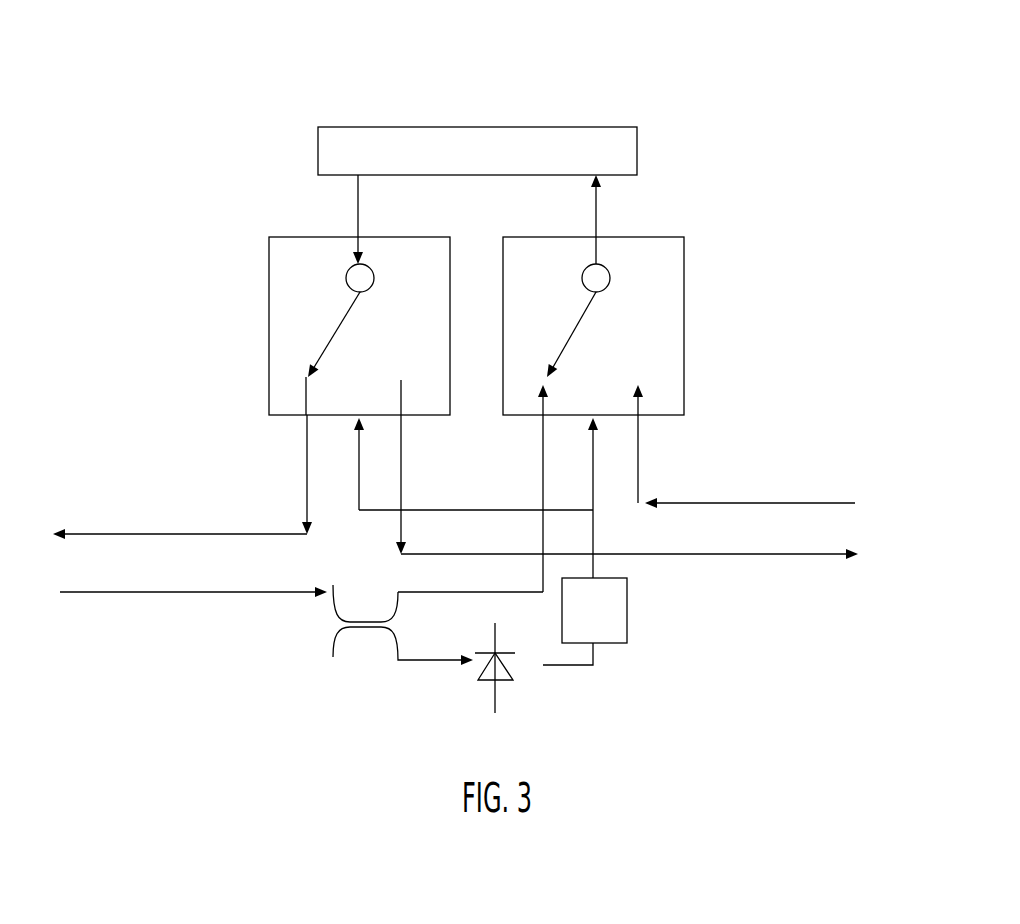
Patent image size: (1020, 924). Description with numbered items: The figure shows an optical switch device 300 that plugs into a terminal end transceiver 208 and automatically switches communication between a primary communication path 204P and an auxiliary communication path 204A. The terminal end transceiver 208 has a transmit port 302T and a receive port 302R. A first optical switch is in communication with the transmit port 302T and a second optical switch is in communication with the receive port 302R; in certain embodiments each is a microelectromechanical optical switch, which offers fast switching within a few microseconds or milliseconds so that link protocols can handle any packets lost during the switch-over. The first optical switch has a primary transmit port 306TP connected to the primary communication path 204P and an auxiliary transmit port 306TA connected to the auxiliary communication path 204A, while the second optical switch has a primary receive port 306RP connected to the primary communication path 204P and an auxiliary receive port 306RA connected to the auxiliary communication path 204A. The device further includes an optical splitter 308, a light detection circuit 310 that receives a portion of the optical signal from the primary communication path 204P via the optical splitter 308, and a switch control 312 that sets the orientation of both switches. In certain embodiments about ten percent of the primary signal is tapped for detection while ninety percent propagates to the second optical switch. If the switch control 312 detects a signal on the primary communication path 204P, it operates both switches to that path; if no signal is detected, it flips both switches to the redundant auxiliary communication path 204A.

The optical switch device 300 is at (836, 288).
The terminal end transceiver 208 is at (618, 127).
The transmit port 302T is at (357, 176).
The receive port 302R is at (601, 182).
The primary transmit port 306TP is at (303, 418).
The auxiliary transmit port 306TA is at (405, 418).
The primary receive port 306RP is at (543, 418).
The auxiliary receive port 306RA is at (640, 418).
The primary communication path 204P is at (124, 505).
The auxiliary communication path 204A is at (826, 479).
The optical splitter 308 is at (333, 643).
The light detection circuit 310 is at (483, 678).
The switch control 312 is at (627, 640).